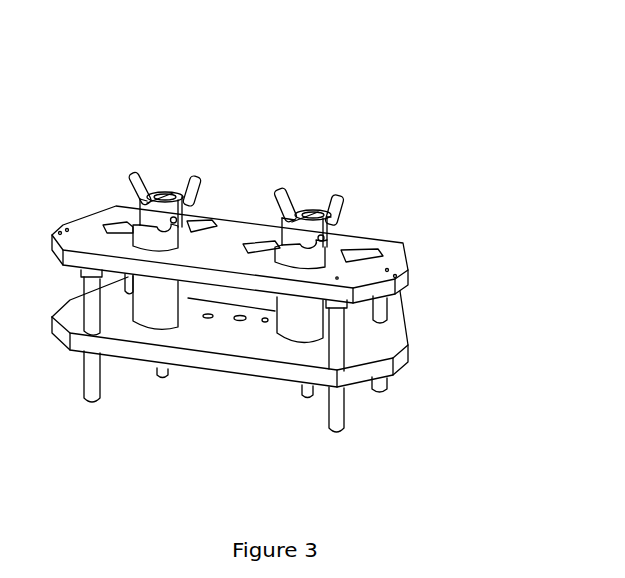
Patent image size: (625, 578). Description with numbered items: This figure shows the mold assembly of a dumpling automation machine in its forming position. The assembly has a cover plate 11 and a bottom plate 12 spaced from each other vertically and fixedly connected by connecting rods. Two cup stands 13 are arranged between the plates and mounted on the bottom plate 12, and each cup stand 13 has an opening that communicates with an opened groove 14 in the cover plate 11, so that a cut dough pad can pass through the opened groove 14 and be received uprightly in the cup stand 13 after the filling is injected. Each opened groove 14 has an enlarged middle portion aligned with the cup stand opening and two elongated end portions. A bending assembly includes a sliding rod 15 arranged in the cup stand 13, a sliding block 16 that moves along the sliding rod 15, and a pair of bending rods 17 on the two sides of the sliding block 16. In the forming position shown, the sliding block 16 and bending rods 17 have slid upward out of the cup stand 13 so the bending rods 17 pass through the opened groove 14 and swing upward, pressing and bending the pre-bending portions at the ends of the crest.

The cover plate 11 is at (397, 253).
The bottom plate 12 is at (385, 343).
The cup stand 13 is at (280, 322).
The opened groove 14 is at (110, 227).
The sliding rod 15 is at (152, 370).
The sliding block 16 is at (172, 197).
The bending rod 17 is at (340, 207).